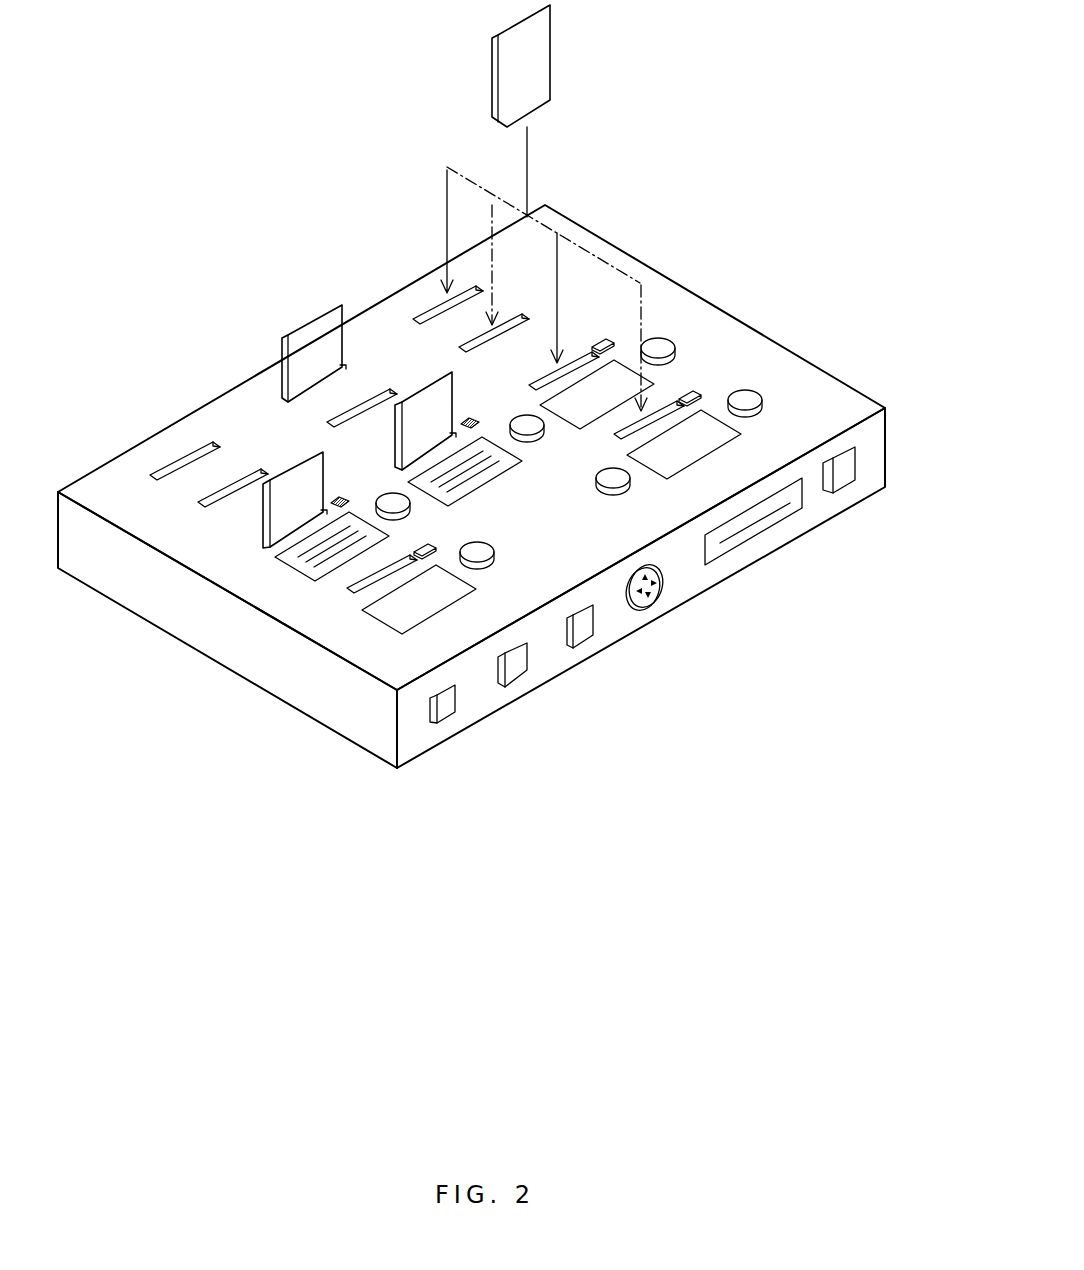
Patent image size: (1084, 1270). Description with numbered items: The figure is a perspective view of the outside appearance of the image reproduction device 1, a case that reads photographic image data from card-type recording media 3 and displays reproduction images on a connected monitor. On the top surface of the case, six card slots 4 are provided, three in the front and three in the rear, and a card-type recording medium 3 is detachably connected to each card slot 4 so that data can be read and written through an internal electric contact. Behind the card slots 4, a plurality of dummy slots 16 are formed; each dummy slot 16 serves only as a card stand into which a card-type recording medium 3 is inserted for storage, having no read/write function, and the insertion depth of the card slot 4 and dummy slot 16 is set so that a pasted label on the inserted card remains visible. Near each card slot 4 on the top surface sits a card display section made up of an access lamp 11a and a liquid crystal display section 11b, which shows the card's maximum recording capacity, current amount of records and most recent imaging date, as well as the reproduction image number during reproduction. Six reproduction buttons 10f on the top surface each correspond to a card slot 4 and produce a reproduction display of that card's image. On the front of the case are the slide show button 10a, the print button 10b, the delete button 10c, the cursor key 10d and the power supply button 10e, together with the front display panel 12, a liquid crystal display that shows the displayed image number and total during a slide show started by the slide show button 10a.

The image reproduction device 1 is at (670, 278).
The card-type recording medium 3 is at (553, 36).
The card slot 4 is at (533, 390).
The slide show button 10a is at (456, 703).
The print button 10b is at (528, 660).
The delete button 10c is at (594, 622).
The cursor key 10d is at (668, 584).
The power supply button 10e is at (858, 462).
The reproduction button 10f is at (668, 336).
The access lamp 11a is at (693, 391).
The liquid crystal display section 11b is at (390, 630).
The front display panel 12 is at (798, 508).
The dummy slot 16 is at (187, 450).